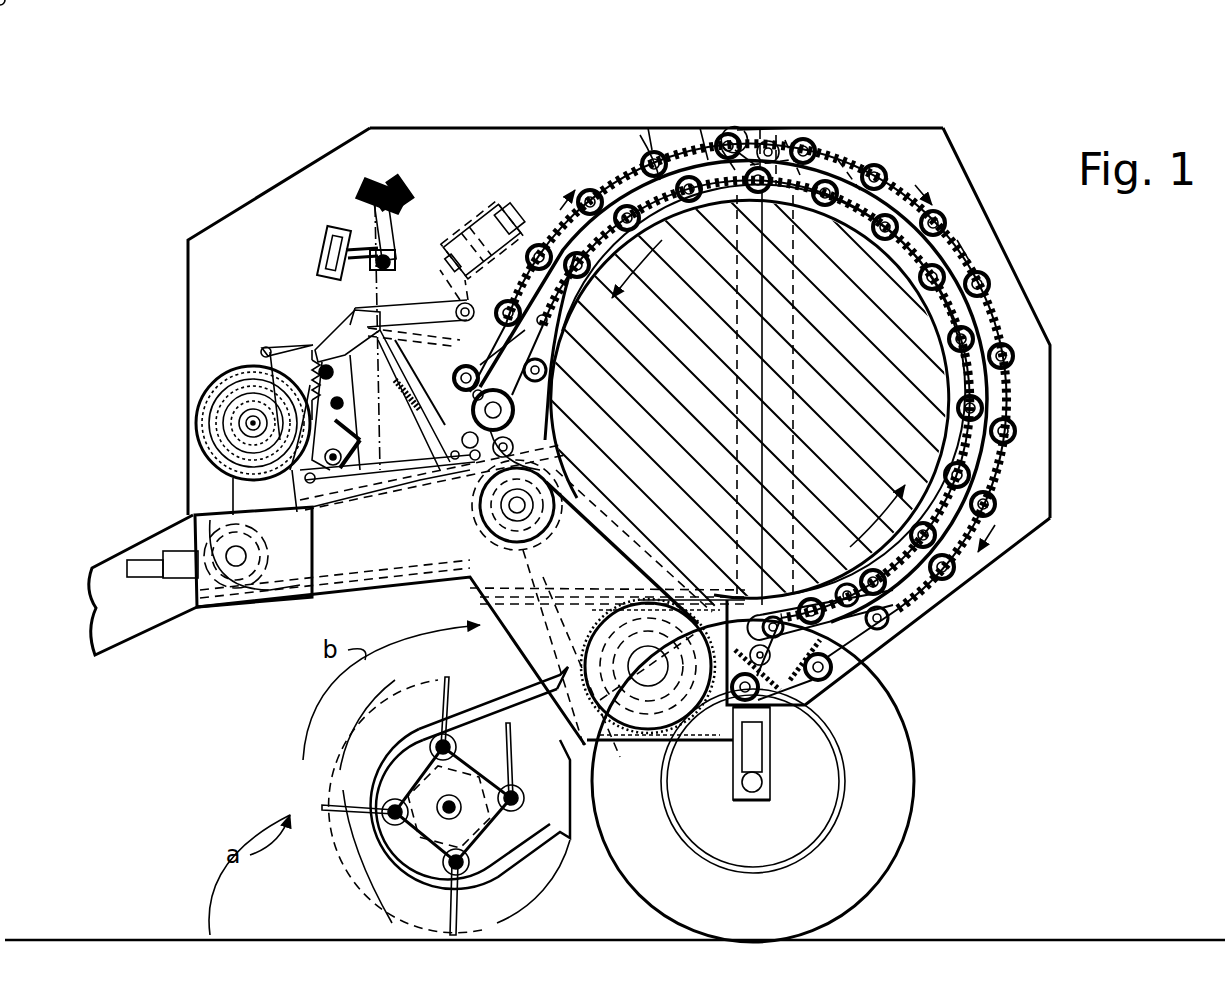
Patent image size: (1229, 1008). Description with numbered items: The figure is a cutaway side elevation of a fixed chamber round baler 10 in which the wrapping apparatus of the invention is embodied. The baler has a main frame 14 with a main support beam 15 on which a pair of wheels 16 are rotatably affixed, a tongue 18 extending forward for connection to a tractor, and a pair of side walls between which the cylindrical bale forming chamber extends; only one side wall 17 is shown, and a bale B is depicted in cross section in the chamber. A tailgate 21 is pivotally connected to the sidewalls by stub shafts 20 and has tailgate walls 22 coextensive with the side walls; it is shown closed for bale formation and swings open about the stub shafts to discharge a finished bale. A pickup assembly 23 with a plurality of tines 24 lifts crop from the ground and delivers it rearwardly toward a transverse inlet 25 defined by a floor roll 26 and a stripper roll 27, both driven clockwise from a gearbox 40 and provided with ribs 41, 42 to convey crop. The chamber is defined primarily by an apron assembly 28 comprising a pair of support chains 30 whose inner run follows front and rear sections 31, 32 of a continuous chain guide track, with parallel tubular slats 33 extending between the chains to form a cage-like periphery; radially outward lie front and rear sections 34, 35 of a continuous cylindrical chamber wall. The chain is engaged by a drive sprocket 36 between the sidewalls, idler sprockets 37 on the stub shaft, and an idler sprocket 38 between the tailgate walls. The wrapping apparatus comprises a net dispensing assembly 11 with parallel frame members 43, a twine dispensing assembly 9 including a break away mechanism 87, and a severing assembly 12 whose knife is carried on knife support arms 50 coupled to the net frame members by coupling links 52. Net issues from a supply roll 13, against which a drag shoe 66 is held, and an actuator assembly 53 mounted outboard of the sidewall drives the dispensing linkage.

The round baler 10 is at (1040, 132).
The twine dispensing assembly 9 is at (345, 200).
The actuator assembly 53 is at (452, 205).
The main frame 14 is at (500, 128).
The front section of chain guide track 31 is at (590, 185).
The slats 33 is at (625, 200).
The front section of bale chamber wall 34 is at (670, 165).
The idler sprockets 37 is at (712, 150).
The stub shafts 20 is at (765, 145).
The rear section of bale chamber wall 35 is at (850, 185).
The side wall 17 is at (275, 200).
The break away mechanism 87 is at (420, 185).
The apron assembly 28 is at (960, 240).
The tailgate 21 is at (1008, 250).
The rear section of chain guide track 32 is at (1000, 305).
The support chains 30 is at (1005, 325).
The bale B is at (1010, 410).
The tailgate walls 22 is at (1020, 505).
The net dispensing assembly 11 is at (337, 312).
The frame member 43 is at (420, 318).
The drag shoe 66 is at (270, 345).
The supply roll 13 is at (218, 390).
The drive sprocket 36 is at (482, 385).
The coupling link 52 is at (385, 405).
The knife support arm 50 is at (400, 485).
The ribs 42 is at (478, 505).
The stripper roll 27 is at (478, 518).
The severing assembly 12 is at (400, 512).
The inlet 25 is at (515, 595).
The ribs 41 is at (605, 612).
The gearbox 40 is at (240, 590).
The tongue 18 is at (145, 630).
The pickup assembly 23 is at (316, 777).
The tines 24 is at (373, 885).
The floor roll 26 is at (680, 790).
The main support beam 15 is at (790, 740).
The wheels 16 is at (915, 812).
The idler sprocket 38 is at (835, 655).